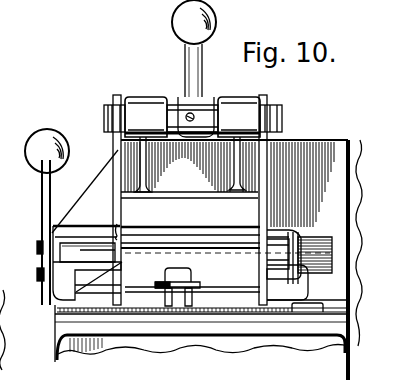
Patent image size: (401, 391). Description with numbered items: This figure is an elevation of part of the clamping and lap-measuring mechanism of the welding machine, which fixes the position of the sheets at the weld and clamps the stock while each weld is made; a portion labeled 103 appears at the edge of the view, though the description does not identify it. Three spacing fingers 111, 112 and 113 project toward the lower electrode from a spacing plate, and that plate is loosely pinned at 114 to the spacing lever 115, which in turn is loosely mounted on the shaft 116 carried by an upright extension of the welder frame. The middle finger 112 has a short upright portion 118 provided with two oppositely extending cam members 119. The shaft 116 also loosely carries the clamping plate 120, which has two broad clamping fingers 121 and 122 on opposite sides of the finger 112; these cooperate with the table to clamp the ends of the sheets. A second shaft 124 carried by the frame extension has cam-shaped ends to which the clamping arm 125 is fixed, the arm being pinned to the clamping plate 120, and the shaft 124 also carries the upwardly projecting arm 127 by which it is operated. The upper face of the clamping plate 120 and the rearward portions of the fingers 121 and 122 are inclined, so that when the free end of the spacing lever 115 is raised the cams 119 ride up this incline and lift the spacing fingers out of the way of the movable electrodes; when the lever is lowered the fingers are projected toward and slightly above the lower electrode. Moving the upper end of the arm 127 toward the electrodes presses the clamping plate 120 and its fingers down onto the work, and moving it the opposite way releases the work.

The frame 103 is at (181, 245).
The spacing finger 111 is at (57, 301).
The middle finger 112 is at (181, 300).
The spacing finger 113 is at (273, 308).
The pin 114 is at (40, 277).
The spacing lever 115 is at (50, 207).
The shaft 116 is at (38, 249).
The upright portion 118 is at (168, 282).
The cam members 119 is at (198, 289).
The clamping plate 120 is at (225, 259).
The clamping finger 121 is at (122, 306).
The clamping finger 122 is at (233, 297).
The shaft 124 is at (106, 120).
The clamping arm 125 is at (117, 160).
The upwardly projecting arm 127 is at (186, 71).